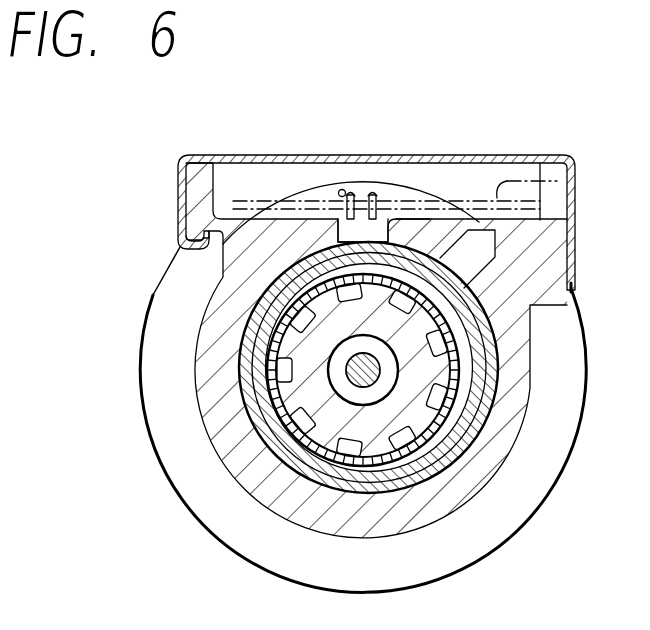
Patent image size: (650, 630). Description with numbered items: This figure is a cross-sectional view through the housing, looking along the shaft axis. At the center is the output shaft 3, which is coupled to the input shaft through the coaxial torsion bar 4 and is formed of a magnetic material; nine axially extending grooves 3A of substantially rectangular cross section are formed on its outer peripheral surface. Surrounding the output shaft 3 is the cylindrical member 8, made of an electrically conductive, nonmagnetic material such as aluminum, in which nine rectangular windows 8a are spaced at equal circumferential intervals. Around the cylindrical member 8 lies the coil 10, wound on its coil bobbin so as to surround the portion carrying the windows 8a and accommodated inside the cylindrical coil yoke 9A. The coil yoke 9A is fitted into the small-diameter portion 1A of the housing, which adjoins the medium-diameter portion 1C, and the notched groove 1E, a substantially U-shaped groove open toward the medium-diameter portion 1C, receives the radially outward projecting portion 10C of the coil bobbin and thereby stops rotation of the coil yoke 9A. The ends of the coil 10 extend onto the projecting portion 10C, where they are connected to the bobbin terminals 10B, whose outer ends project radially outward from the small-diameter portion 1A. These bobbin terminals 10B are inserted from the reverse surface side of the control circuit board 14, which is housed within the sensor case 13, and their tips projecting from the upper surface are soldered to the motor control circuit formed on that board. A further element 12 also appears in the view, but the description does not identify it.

The small-diameter portion 1A is at (262, 210).
The medium-diameter portion 1C is at (342, 189).
The notched groove 1E is at (332, 224).
The output shaft 3 is at (300, 487).
The grooves 3A is at (426, 478).
The torsion bar 4 is at (325, 465).
The cylindrical member 8 is at (366, 495).
The rectangular windows 8a is at (258, 482).
The coil yoke 9A is at (497, 352).
The coil 10 is at (480, 394).
The bobbin terminals 10B is at (368, 215).
The projecting portion 10C is at (452, 205).
The boss arc 12 is at (400, 185).
The sensor case 13 is at (513, 153).
The control circuit board 14 is at (558, 181).